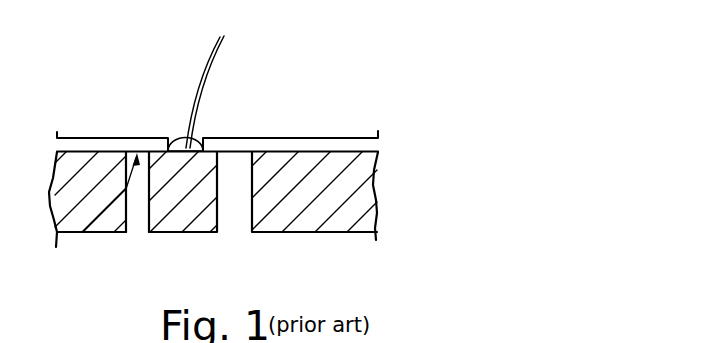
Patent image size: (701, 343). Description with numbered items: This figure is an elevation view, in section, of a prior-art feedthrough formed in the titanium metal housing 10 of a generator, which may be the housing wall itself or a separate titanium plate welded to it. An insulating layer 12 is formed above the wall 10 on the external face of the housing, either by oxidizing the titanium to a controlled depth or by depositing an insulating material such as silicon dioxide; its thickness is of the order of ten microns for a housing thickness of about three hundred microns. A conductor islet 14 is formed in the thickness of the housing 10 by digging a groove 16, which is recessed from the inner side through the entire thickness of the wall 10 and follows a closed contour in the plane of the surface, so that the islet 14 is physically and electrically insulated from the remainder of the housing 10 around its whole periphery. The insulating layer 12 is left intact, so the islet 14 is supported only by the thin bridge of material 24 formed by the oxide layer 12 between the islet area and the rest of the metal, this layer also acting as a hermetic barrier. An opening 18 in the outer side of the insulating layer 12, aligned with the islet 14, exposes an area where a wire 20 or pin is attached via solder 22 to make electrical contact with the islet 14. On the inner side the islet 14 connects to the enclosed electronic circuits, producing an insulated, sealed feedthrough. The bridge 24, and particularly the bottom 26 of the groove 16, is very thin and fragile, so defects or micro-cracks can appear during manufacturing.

The titanium metal housing 10 is at (310, 213).
The insulating layer 12 is at (318, 137).
The conductor islet 14 is at (180, 216).
The groove 16 is at (135, 221).
The opening 18 is at (170, 137).
The wire 20 is at (197, 81).
The solder 22 is at (203, 136).
The bridge of material 24 is at (112, 136).
The bottom of the groove 26 is at (83, 232).